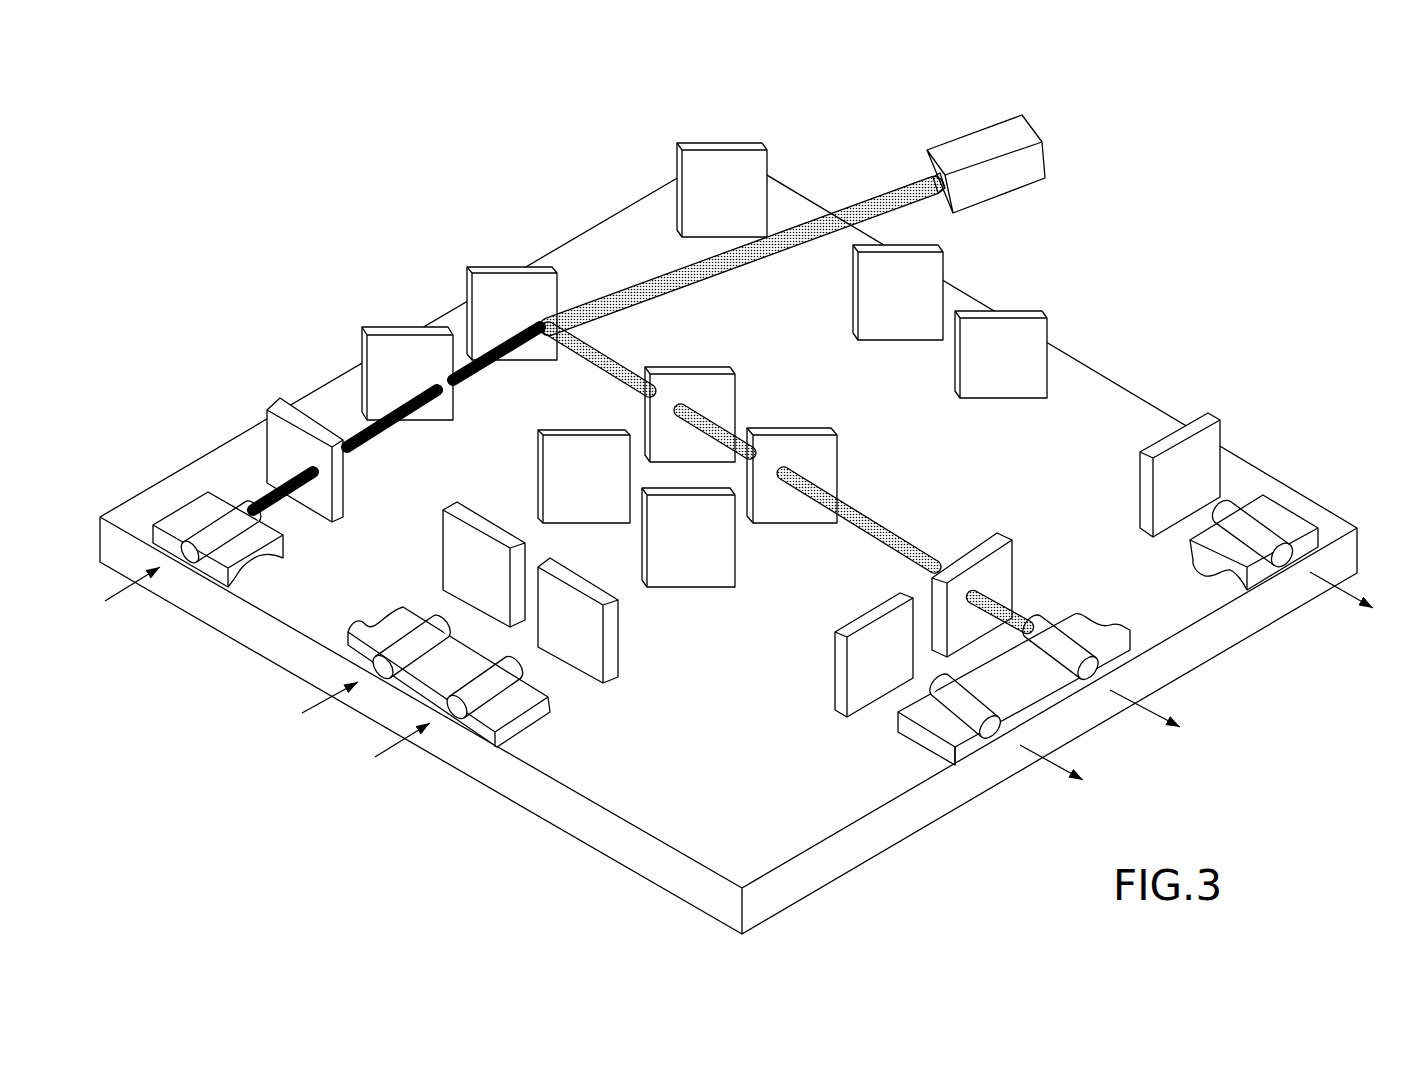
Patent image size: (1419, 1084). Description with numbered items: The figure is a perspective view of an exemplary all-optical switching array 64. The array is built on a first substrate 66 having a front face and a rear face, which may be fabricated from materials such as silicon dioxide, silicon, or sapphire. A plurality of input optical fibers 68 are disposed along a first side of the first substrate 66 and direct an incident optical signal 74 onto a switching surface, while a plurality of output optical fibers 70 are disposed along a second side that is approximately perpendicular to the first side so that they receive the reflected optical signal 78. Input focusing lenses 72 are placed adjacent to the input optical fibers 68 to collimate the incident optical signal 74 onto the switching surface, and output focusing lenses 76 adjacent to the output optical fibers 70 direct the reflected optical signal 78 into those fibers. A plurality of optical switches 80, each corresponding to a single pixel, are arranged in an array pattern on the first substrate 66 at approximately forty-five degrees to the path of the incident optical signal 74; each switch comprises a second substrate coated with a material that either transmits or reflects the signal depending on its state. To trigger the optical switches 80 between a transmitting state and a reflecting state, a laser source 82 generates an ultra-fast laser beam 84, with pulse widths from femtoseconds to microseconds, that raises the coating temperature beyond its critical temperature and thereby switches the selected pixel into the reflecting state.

The all-optical switching array 64 is at (1288, 140).
The first substrate 66 is at (622, 842).
The input optical fibers 68 is at (187, 560).
The output optical fibers 70 is at (1280, 560).
The input focusing lenses 72 is at (268, 407).
The incident optical signal 74 is at (260, 503).
The output focusing lenses 76 is at (1212, 413).
The reflected optical signal 78 is at (622, 367).
The optical switches 80 is at (722, 147).
The laser source 82 is at (980, 138).
The ultra-fast laser beam 84 is at (853, 203).